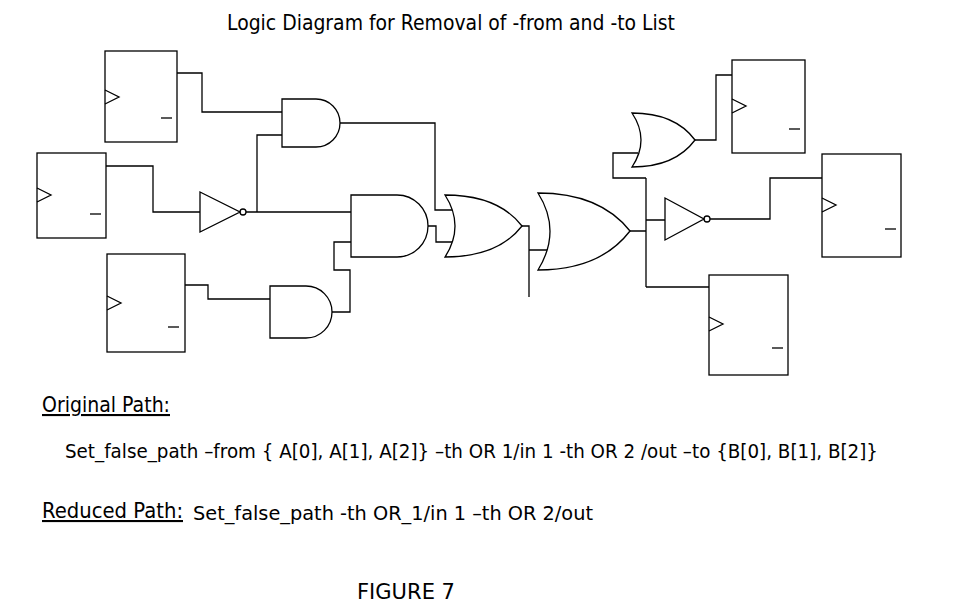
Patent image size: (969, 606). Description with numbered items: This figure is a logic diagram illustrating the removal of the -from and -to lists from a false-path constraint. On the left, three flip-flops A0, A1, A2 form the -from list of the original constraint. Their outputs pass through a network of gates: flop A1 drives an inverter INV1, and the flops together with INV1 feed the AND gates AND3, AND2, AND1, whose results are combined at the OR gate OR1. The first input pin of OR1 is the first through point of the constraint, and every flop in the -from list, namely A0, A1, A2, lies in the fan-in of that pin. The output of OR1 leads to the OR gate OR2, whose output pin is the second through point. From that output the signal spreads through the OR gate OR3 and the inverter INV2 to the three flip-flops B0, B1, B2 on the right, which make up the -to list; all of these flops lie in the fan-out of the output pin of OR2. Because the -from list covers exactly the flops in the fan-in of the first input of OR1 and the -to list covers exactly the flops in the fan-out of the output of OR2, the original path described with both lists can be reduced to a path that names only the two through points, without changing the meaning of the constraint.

The flop A0 is at (193, 108).
The flop A1 is at (118, 204).
The flop A2 is at (188, 311).
The flop B0 is at (768, 117).
The flop B1 is at (861, 215).
The flop B2 is at (748, 336).
The inverter INV1 is at (275, 192).
The inverter INV2 is at (743, 219).
The AND gate AND1 is at (310, 290).
The AND gate AND2 is at (401, 226).
The AND gate AND3 is at (367, 154).
The OR gate OR1 is at (496, 246).
The OR gate OR2 is at (623, 220).
The OR gate OR3 is at (682, 121).